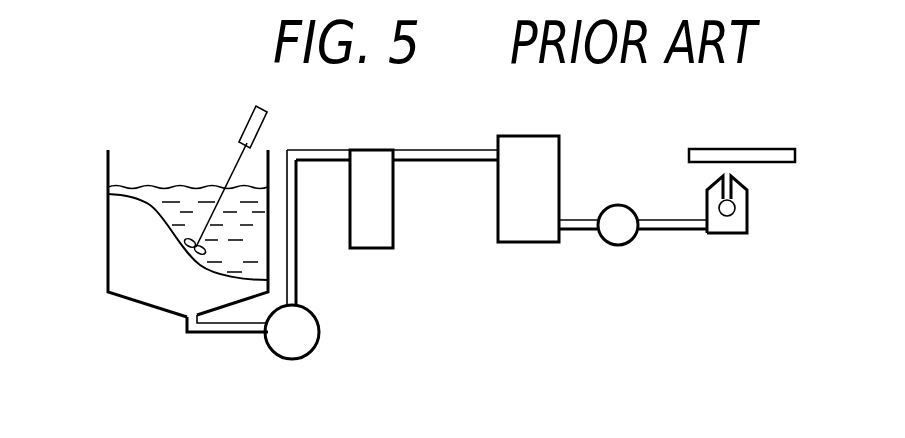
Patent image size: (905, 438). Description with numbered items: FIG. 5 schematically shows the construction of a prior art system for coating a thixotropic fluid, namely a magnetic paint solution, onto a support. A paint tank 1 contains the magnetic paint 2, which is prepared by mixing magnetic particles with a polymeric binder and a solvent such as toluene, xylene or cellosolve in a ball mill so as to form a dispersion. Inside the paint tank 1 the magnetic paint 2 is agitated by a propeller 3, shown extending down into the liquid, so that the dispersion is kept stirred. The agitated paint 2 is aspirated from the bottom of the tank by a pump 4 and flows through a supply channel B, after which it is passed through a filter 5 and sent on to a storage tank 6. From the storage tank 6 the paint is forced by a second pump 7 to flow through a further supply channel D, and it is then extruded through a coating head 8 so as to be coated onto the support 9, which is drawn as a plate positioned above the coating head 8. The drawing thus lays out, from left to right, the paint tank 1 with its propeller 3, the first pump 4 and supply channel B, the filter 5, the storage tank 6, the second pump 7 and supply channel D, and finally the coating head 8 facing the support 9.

The paint tank 1 is at (108, 222).
The magnetic paint 2 is at (163, 185).
The propeller 3 is at (196, 257).
The pump 4 is at (319, 338).
The filter 5 is at (394, 225).
The storage tank 6 is at (560, 163).
The pump 7 is at (623, 212).
The coating head 8 is at (735, 234).
The support 9 is at (740, 148).
The supply channel B is at (230, 334).
The supply channel D is at (662, 231).